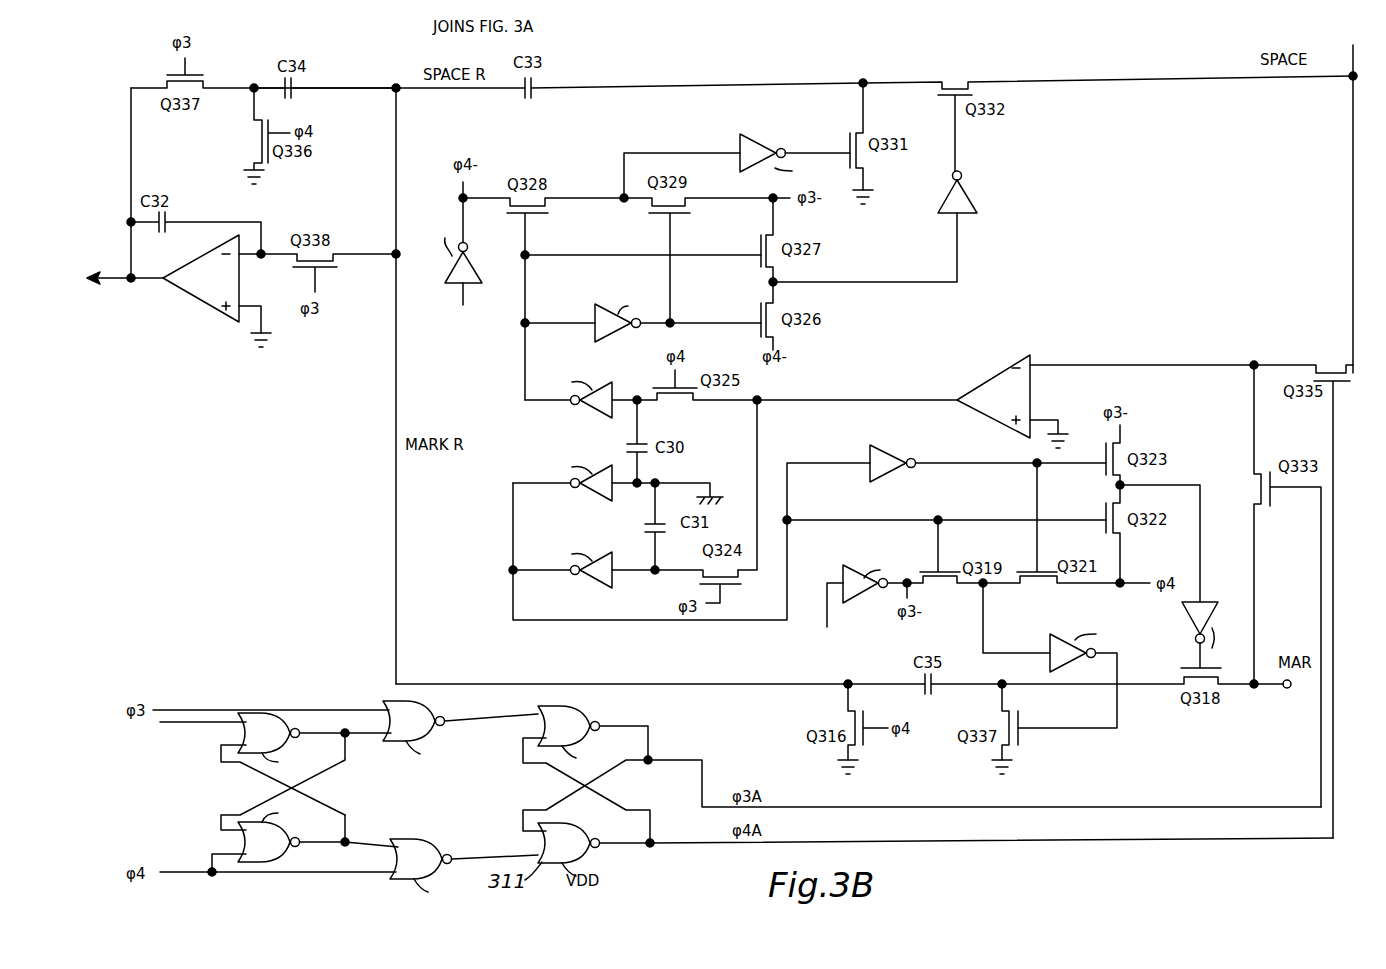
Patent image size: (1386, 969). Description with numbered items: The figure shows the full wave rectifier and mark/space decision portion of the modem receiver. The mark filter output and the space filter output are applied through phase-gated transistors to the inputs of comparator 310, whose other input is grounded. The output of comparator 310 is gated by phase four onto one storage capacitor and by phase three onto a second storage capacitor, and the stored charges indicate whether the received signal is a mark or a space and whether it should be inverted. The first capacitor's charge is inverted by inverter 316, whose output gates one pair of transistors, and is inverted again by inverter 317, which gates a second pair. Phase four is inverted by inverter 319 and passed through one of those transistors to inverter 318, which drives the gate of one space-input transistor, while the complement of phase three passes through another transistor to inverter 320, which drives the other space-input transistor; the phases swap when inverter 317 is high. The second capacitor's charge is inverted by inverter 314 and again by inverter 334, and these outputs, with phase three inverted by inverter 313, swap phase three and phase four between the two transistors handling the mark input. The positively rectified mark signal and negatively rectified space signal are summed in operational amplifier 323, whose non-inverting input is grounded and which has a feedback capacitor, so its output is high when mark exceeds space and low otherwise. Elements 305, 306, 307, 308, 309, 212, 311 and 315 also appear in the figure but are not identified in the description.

The operational amplifier 323 is at (208, 316).
The inverter 319 is at (448, 276).
The inverter 318 is at (755, 140).
The inverter 317 is at (593, 310).
The inverter 320 is at (964, 190).
The inverter 316 is at (600, 389).
The inverter 315 is at (585, 498).
The inverter 314 is at (598, 586).
The comparator 310 is at (1000, 358).
The inverter 334 is at (876, 450).
The inverter 313 is at (842, 565).
The inverter 212 is at (1050, 645).
The inverter 311 is at (1206, 606).
The NOR gate 305 is at (238, 733).
The NOR gate 306 is at (238, 840).
The NOR gate 307 is at (396, 743).
The NOR gate 308 is at (400, 852).
The NOR gate 309 is at (582, 718).